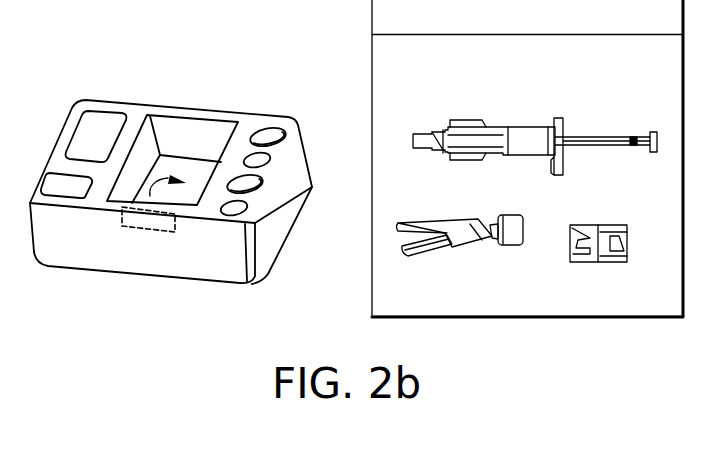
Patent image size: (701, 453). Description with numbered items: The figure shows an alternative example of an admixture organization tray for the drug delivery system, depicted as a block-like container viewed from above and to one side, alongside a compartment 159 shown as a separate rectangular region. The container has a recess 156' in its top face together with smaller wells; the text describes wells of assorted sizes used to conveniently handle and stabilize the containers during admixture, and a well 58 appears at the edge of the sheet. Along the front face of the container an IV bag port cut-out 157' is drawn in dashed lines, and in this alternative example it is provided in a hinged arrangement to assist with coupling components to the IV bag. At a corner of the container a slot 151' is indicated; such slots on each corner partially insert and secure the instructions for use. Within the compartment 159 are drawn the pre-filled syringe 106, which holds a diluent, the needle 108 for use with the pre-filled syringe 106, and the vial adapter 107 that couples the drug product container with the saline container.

The adjacent component (cut off) 58 is at (3, 0).
The slots 151' is at (171, 167).
The central recess / pocket 156' is at (172, 131).
The IV bag port cut-out 157' is at (146, 267).
The compartment 159 is at (372, 18).
The pre-filled syringe 106 is at (520, 128).
The needle 108 is at (428, 255).
The vial adapter 107 is at (600, 262).